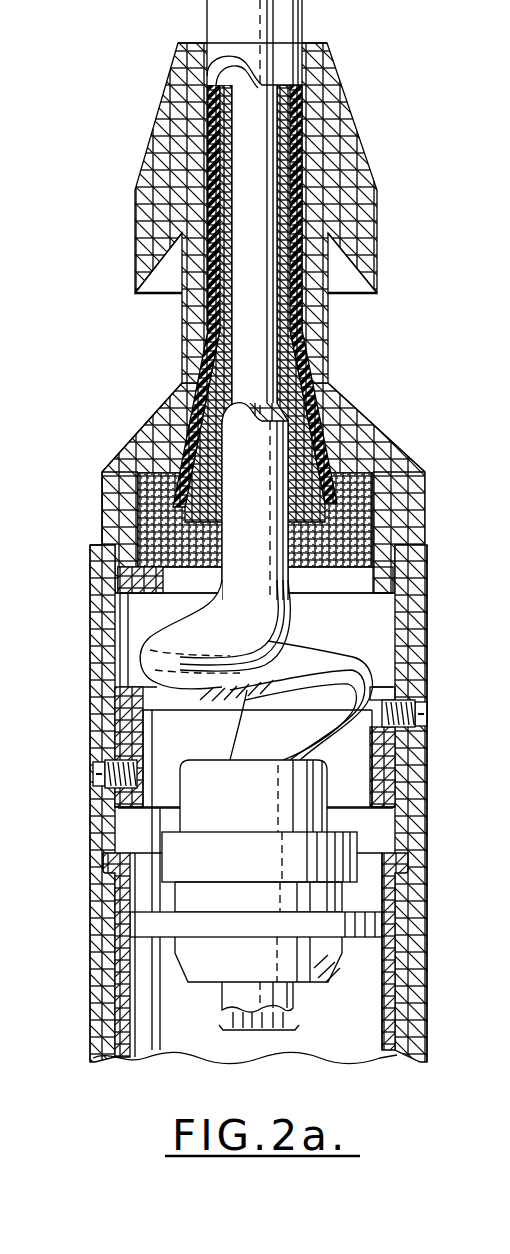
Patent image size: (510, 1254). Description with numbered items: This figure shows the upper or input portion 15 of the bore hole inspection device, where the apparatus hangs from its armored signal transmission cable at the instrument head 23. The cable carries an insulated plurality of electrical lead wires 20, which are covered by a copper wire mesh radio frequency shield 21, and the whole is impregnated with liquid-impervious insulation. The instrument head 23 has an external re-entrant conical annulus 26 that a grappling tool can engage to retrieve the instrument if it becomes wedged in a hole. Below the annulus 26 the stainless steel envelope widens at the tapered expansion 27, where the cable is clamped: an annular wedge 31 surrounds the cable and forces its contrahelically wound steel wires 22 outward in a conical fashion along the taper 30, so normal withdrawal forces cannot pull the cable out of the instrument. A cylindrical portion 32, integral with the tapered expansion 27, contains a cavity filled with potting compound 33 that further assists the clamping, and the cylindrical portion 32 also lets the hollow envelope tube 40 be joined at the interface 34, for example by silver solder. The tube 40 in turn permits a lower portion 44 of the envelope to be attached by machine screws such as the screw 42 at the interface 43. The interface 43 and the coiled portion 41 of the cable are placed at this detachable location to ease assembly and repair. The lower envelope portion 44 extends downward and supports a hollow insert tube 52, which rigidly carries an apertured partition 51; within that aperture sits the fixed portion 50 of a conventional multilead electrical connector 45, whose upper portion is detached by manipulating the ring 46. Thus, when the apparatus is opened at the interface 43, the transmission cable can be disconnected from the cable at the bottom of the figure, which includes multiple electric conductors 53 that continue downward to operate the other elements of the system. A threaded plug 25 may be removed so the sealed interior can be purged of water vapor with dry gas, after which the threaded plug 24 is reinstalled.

The upper or input portion 15 is at (434, 640).
The electrical lead wires 20 is at (212, 74).
The copper wire mesh radio frequency shield 21 is at (217, 133).
The contrahelically wound steel wires 22 is at (208, 182).
The instrument head 23 is at (111, 88).
The threaded plug 24 is at (96, 770).
The threaded plug 25 is at (112, 803).
The external re-entrant conical annulus 26 is at (140, 265).
The tapered expansion 27 is at (334, 404).
The taper 30 is at (322, 435).
The annular wedge 31 is at (192, 414).
The cylindrical portion 32 is at (98, 505).
The potting compound 33 is at (355, 478).
The interface 34 is at (96, 565).
The hollow envelope tube 40 is at (100, 632).
The coiled portion 41 is at (320, 656).
The screw 42 is at (428, 716).
The interface 43 is at (125, 714).
The lower portion of the envelope 44 is at (428, 812).
The multilead electrical connector 45 is at (198, 765).
The ring 46 is at (353, 800).
The fixed portion 50 is at (177, 887).
The apertured partition 51 is at (370, 932).
The hollow insert tube 52 is at (378, 1030).
The electric conductors 53 is at (259, 1032).